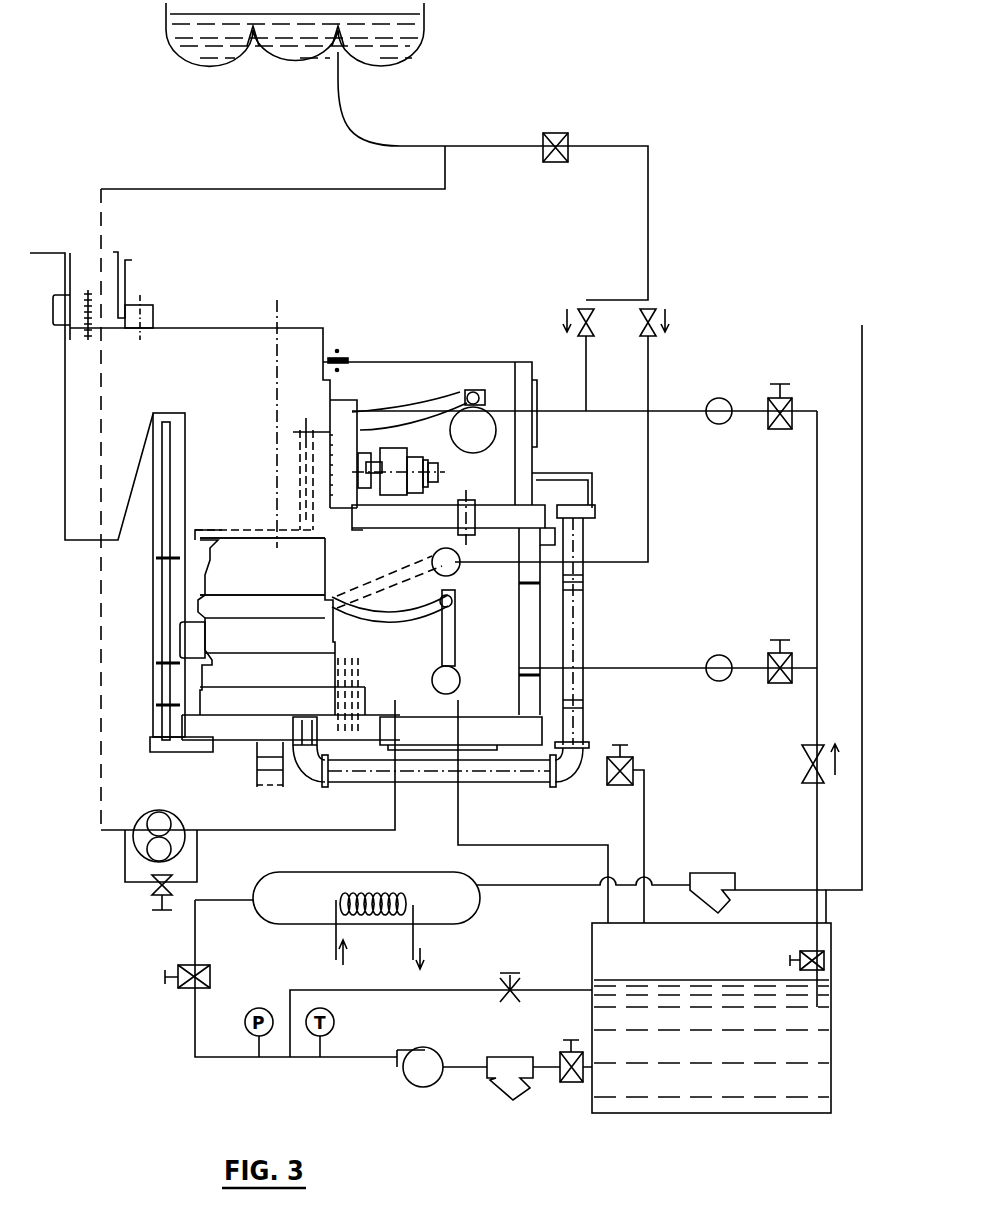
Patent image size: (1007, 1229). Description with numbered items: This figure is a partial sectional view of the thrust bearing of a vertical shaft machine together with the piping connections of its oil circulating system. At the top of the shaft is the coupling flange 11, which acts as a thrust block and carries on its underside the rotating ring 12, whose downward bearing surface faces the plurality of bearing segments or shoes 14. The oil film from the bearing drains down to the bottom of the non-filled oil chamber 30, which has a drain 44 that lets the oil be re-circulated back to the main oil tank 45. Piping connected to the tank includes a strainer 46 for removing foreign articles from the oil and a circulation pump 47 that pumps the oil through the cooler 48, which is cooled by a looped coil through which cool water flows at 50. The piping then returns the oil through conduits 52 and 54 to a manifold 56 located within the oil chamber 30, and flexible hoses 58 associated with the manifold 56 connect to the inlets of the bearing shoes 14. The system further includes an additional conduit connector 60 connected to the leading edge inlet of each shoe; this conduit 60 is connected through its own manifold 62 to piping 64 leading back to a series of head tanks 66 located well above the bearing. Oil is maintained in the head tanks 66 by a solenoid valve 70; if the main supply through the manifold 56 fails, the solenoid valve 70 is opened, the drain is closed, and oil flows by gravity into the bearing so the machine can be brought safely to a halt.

The coupling flange 11 is at (237, 343).
The rotating ring 12 is at (308, 556).
The bearing segments or shoes 14 is at (308, 607).
The non-filled oil chamber 30 is at (411, 669).
The drain 44 is at (460, 800).
The main oil tank 45 is at (832, 1040).
The strainer 46 is at (513, 1087).
The circulation pump 47 is at (427, 1085).
The cooler 48 is at (473, 913).
The looped coil 50 is at (405, 880).
The conduit 52 is at (813, 836).
The conduit 54 is at (640, 668).
The manifold 56 is at (447, 668).
The flexible hoses 58 is at (455, 583).
The conduit connector 60 is at (410, 572).
The manifold 62 is at (458, 555).
The piping 64 is at (648, 522).
The head tanks 66 is at (424, 37).
The solenoid valve 70 is at (558, 132).